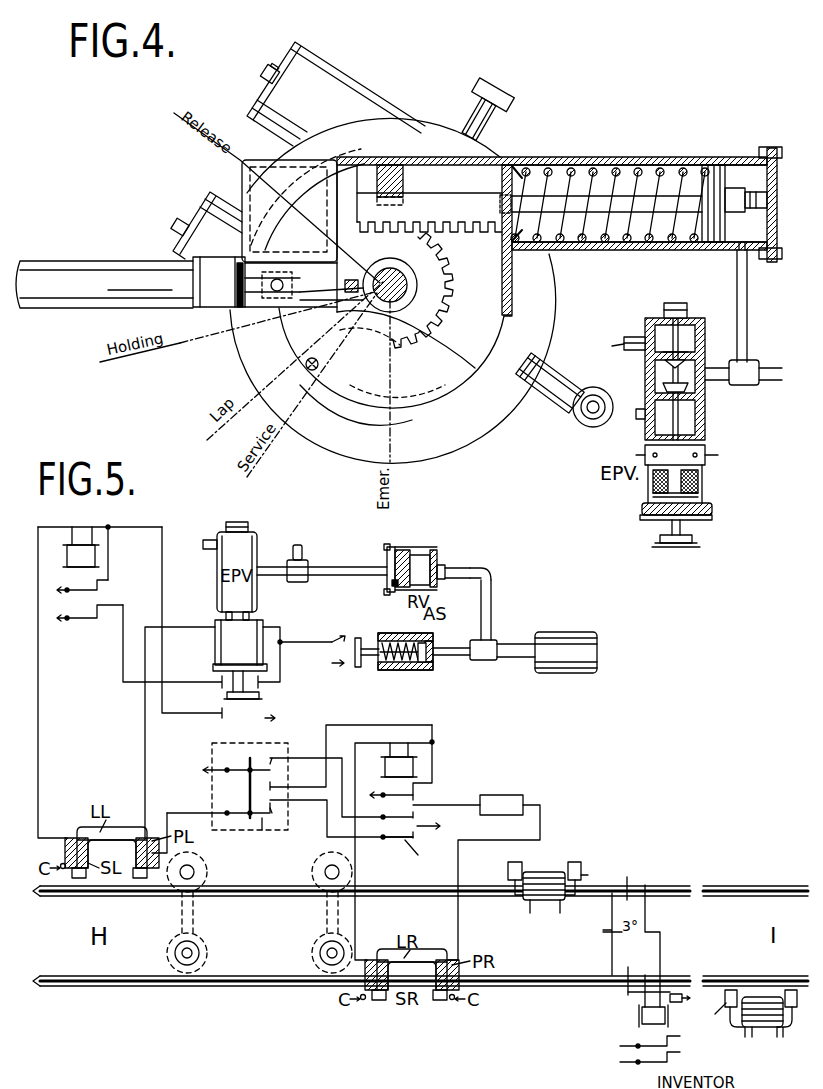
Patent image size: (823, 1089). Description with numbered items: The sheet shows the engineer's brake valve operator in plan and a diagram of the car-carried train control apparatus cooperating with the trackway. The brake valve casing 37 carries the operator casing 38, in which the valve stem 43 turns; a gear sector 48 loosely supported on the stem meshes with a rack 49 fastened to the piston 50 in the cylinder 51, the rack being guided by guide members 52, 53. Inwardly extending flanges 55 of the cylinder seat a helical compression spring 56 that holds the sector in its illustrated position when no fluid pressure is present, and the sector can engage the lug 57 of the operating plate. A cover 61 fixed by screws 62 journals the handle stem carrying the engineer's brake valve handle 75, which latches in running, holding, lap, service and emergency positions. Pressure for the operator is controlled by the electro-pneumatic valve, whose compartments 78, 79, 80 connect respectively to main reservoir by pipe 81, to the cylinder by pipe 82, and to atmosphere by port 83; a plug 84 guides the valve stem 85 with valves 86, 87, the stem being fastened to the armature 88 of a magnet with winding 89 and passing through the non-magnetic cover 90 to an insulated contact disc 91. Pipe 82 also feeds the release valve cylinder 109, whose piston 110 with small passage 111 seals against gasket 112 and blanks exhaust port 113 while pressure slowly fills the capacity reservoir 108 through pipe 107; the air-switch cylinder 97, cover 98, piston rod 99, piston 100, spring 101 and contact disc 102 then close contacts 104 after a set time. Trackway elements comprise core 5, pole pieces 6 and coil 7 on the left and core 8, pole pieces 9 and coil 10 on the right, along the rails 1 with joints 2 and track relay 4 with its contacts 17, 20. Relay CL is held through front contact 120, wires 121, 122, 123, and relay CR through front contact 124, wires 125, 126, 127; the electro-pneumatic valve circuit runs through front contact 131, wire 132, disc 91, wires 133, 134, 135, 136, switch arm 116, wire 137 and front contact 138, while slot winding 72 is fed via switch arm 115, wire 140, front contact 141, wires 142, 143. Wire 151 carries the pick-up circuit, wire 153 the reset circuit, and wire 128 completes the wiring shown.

In FIG. 5, the track rail 1 is at (721, 885).
In FIG. 5, the insulated rail joint 2 is at (631, 886).
In FIG. 5, the track relay 4 is at (665, 956).
In FIG. 5, the U-shaped core 5 is at (522, 896).
In FIG. 5, the pole pieces 6 is at (508, 866).
In FIG. 5, the coil 7 is at (555, 873).
In FIG. 5, the core 8 is at (733, 1021).
In FIG. 5, the pole pieces 9 is at (785, 994).
In FIG. 5, the coil 10 is at (770, 1027).
In FIG. 5, the relay contact 17 is at (650, 1056).
In FIG. 5, the relay contact 20 is at (650, 1038).
In FIG. 4, the brake valve casing 37 is at (208, 210).
In FIG. 4, the brake valve operator casing 38 is at (500, 315).
In FIG. 4, the valve stem 43 is at (397, 277).
In FIG. 4, the gear sector 48 is at (440, 276).
In FIG. 4, the rack 49 is at (425, 203).
In FIG. 4, the piston 50 is at (712, 170).
In FIG. 4, the cylinder 51 is at (625, 158).
In FIG. 4, the guide member 52 is at (516, 203).
In FIG. 4, the guide member 53 is at (380, 190).
In FIG. 4, the inwardly extending flanges 55 is at (509, 173).
In FIG. 4, the helical compression spring 56 is at (563, 175).
In FIG. 4, the lug 57 is at (331, 279).
In FIG. 4, the cover 61 is at (358, 397).
In FIG. 4, the screws 62 is at (308, 370).
In FIG. 5, the slot winding 72 is at (523, 800).
In FIG. 4, the engineer's brake valve handle 75 is at (70, 268).
In FIG. 4, the upper compartment 78 is at (690, 332).
In FIG. 4, the middle compartment 79 is at (690, 370).
In FIG. 4, the lower compartment 80 is at (690, 418).
In FIG. 4, the pipe 81 is at (634, 337).
In FIG. 5, the pipe 81 is at (205, 539).
In FIG. 4, the pipe 82 is at (747, 313).
In FIG. 5, the pipe 82 is at (268, 565).
In FIG. 4, the port 83 is at (646, 414).
In FIG. 4, the counterbored plug 84 is at (682, 313).
In FIG. 5, the counterbored plug 84 is at (246, 523).
In FIG. 4, the valve stem 85 is at (679, 348).
In FIG. 4, the valve 86 is at (668, 360).
In FIG. 4, the valve 87 is at (663, 385).
In FIG. 4, the armature 88 is at (707, 505).
In FIG. 4, the magnet winding 89 is at (697, 480).
In FIG. 4, the non-magnetic cover 90 is at (710, 517).
In FIG. 5, the non-magnetic cover 90 is at (214, 667).
In FIG. 4, the insulated contact disc 91 is at (692, 542).
In FIG. 5, the insulated contact disc 91 is at (227, 695).
In FIG. 5, the cylinder 97 is at (410, 672).
In FIG. 5, the cover 98 is at (386, 671).
In FIG. 5, the piston rod 99 is at (380, 641).
In FIG. 5, the piston 100 is at (427, 650).
In FIG. 5, the spring 101 is at (405, 641).
In FIG. 5, the insulated contact disc 102 is at (357, 668).
In FIG. 5, the contacts 104 is at (328, 655).
In FIG. 5, the pipe 107 is at (492, 592).
In FIG. 5, the capacity reservoir 108 is at (570, 637).
In FIG. 5, the cylinder 109 is at (410, 550).
In FIG. 5, the piston 110 is at (390, 583).
In FIG. 5, the passage 111 is at (388, 560).
In FIG. 5, the annular gasket 112 is at (440, 565).
In FIG. 5, the exhaust port 113 is at (425, 553).
In FIG. 5, the switch arm 115 is at (238, 768).
In FIG. 5, the switch arm 116 is at (262, 830).
In FIG. 5, the front contact 120 is at (76, 583).
In FIG. 5, the wire 121 is at (109, 560).
In FIG. 5, the wire 122 is at (99, 529).
In FIG. 5, the wire 123 is at (39, 690).
In FIG. 5, the front contact 124 is at (387, 801).
In FIG. 5, the wire 125 is at (432, 760).
In FIG. 5, the wire 126 is at (430, 742).
In FIG. 5, the wire 127 is at (356, 850).
In FIG. 5, the wire 128 is at (163, 596).
In FIG. 5, the front contact 131 is at (83, 624).
In FIG. 5, the wire 132 is at (123, 674).
In FIG. 5, the wire 133 is at (281, 675).
In FIG. 5, the wire 134 is at (272, 625).
In FIG. 5, the wire 135 is at (147, 749).
In FIG. 5, the wire 136 is at (179, 812).
In FIG. 5, the wire 137 is at (327, 822).
In FIG. 5, the front contact 138 is at (426, 855).
In FIG. 5, the wire 140 is at (289, 758).
In FIG. 5, the front contact 141 is at (418, 827).
In FIG. 5, the wire 142 is at (450, 804).
In FIG. 5, the wire 143 is at (542, 830).
In FIG. 5, the wire 151 is at (309, 640).
In FIG. 5, the wire 153 is at (300, 783).